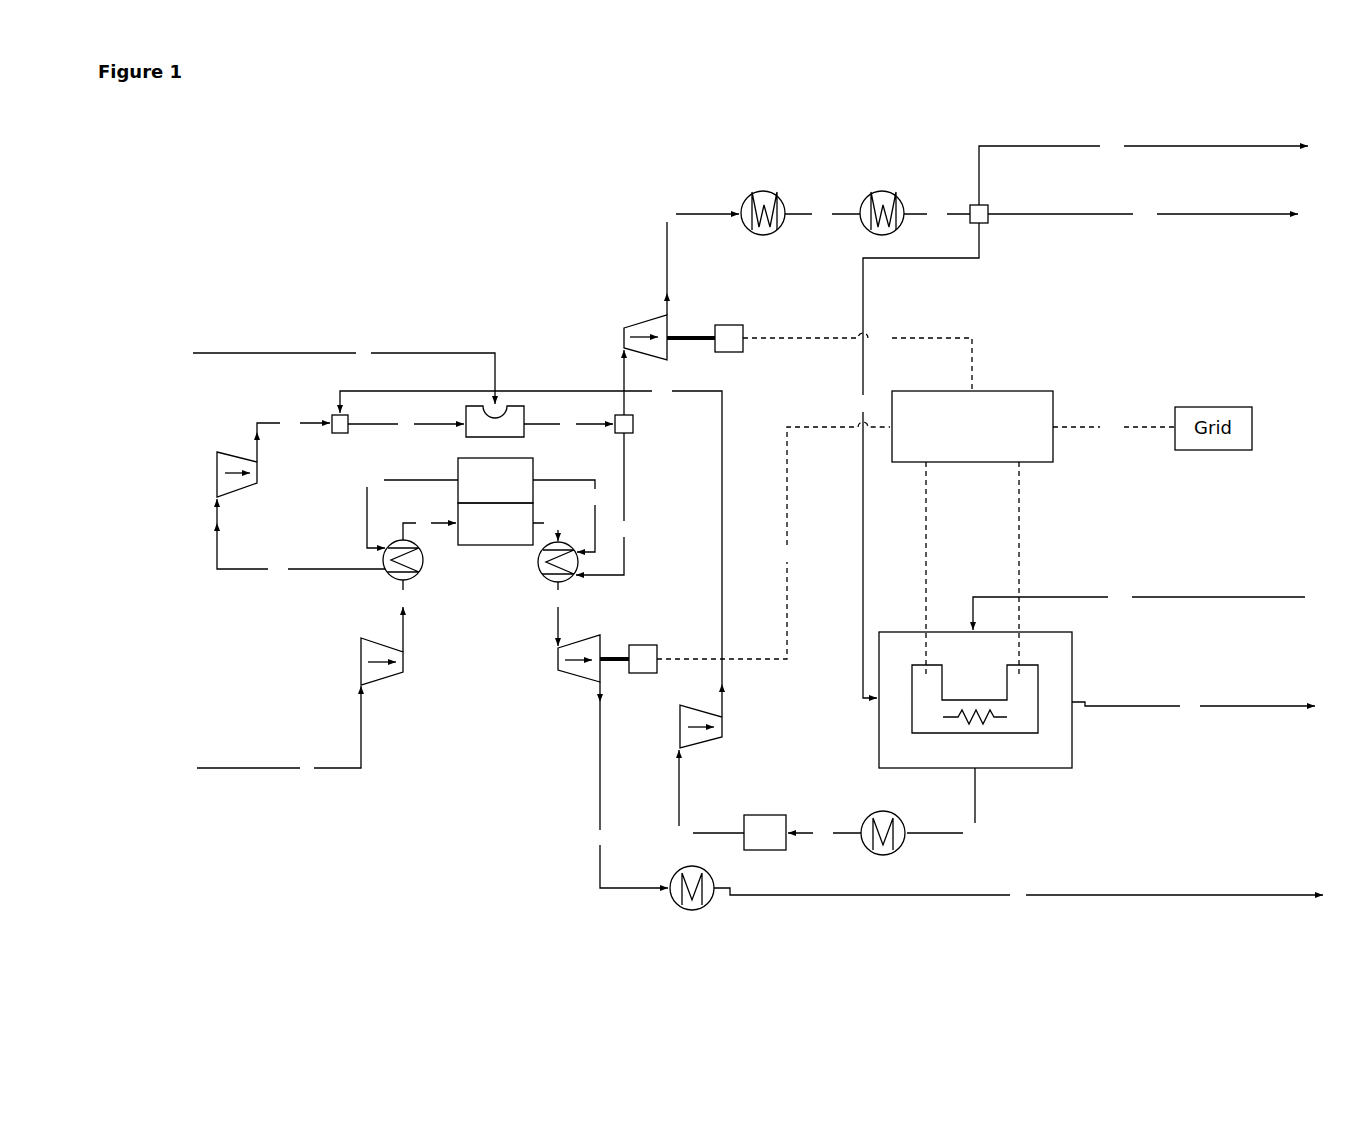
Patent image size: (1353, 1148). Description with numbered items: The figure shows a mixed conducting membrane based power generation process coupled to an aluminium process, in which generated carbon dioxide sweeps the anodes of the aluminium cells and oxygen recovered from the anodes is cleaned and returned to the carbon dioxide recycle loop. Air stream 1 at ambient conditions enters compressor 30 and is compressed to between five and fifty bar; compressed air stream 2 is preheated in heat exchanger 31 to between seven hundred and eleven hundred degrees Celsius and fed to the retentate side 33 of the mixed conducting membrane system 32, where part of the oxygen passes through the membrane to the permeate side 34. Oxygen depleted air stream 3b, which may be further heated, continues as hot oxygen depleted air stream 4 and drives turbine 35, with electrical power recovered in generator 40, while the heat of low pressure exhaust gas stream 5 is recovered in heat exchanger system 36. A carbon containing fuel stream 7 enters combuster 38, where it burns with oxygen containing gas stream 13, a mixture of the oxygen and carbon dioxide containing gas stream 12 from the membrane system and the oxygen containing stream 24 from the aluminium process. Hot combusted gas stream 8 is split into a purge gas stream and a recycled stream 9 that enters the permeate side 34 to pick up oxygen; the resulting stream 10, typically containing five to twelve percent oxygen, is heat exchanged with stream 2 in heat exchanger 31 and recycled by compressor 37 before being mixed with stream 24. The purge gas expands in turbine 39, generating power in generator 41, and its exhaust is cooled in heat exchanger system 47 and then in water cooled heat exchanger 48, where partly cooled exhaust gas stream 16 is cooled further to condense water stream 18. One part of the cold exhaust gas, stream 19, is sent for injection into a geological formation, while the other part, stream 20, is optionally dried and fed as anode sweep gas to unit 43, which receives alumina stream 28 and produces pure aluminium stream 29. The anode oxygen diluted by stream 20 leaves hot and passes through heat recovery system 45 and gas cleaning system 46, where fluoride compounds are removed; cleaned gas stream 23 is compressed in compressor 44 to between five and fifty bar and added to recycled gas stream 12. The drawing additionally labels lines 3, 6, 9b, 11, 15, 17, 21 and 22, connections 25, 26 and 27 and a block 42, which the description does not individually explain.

The air stream 1 is at (279, 731).
The compressed air stream 2 is at (403, 616).
The preheated air stream to unit 33 3 is at (429, 527).
The oxygen depleted air stream 3b is at (547, 528).
The hot oxygen depleted air stream 4 is at (557, 614).
The exhaust gas stream 5 is at (631, 785).
The cooled exhaust stream 6 is at (1018, 895).
The carbon containing fuel stream 7 is at (344, 374).
The hot combusted gas stream 8 is at (568, 424).
The recycled stream 9 is at (602, 504).
The outlet stream from unit 34 9b is at (568, 516).
The oxygen containing recycle stream 10 is at (412, 510).
The stream to compressor 37 11 is at (299, 538).
The recycled oxygen and CO2 containing gas stream 12 is at (292, 438).
The oxygen containing gas stream 13 is at (406, 424).
The turbine exhaust stream 15 is at (698, 260).
The partly cooled exhaust gas stream 16 is at (822, 214).
The further cooled stream 17 is at (937, 214).
The condensed water stream 18 is at (1143, 171).
The cold exhaust gas stream 19 is at (1143, 214).
The anode sweep gas stream 20 is at (917, 460).
The off-gas from Al-process 21 is at (945, 804).
The cooled off-gas stream 22 is at (824, 833).
The cleaned gas stream 23 is at (709, 795).
The oxygen and CO2 containing gas stream from aluminium process 24 is at (532, 533).
The electric power line from generator 40 25 is at (773, 540).
The electric power line from generator 41 26 is at (857, 360).
The electric power line to grid 27 is at (1114, 427).
The Al2O3 stream 28 is at (1139, 609).
The pure aluminium stream 29 is at (1193, 706).
The compressor 30 is at (391, 669).
The heat exchanger 31 is at (414, 565).
The mixed conducting membrane system 32 is at (534, 562).
The retentate side 33 is at (495, 524).
The permeate side 34 is at (495, 480).
The turbine 35 is at (566, 669).
The heat exchanger system 36 is at (692, 907).
The compressor 37 is at (237, 484).
The combuster 38 is at (475, 429).
The turbine 39 is at (637, 331).
The generator 40 is at (628, 670).
The generator 41 is at (705, 347).
The AC/DC converter 42 is at (972, 522).
The aluminium process unit 43 is at (989, 700).
The compressor 44 is at (715, 734).
The heat recovery system 45 is at (896, 836).
The gas cleaning system 46 is at (765, 832).
The heat exchanger system 47 is at (763, 197).
The water cooled heat exchanger 48 is at (882, 198).